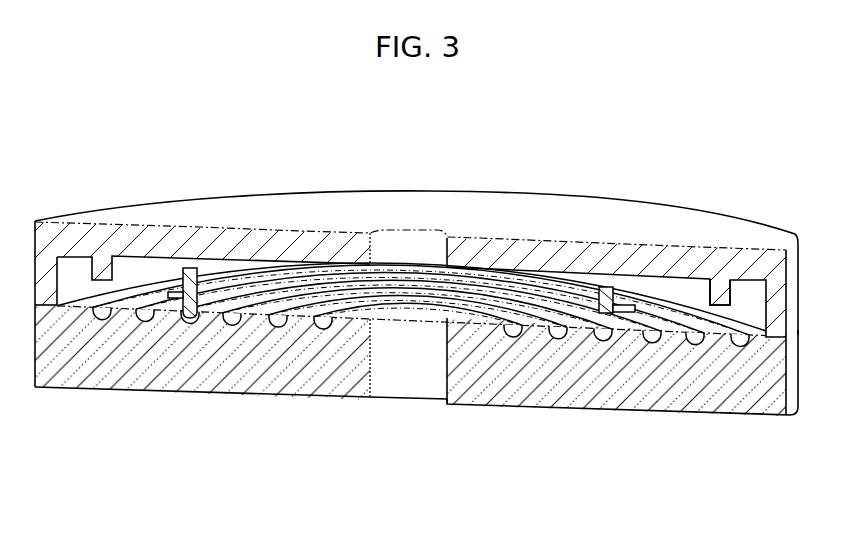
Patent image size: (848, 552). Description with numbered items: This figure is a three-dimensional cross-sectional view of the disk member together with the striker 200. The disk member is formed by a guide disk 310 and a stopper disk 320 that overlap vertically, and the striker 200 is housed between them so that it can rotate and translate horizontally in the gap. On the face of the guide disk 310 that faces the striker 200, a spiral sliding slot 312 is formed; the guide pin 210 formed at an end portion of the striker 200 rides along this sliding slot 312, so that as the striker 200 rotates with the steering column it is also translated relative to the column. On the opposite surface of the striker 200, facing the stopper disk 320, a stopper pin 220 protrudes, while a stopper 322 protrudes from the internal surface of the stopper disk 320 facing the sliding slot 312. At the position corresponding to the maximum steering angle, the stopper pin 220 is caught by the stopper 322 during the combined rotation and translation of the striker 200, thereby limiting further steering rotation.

The striker 200 is at (413, 305).
The guide pin 210 is at (190, 319).
The stopper pin 220 is at (191, 267).
The guide disk 310 is at (713, 395).
The sliding slot 312 is at (323, 325).
The stopper disk 320 is at (100, 267).
The stopper 322 is at (720, 286).